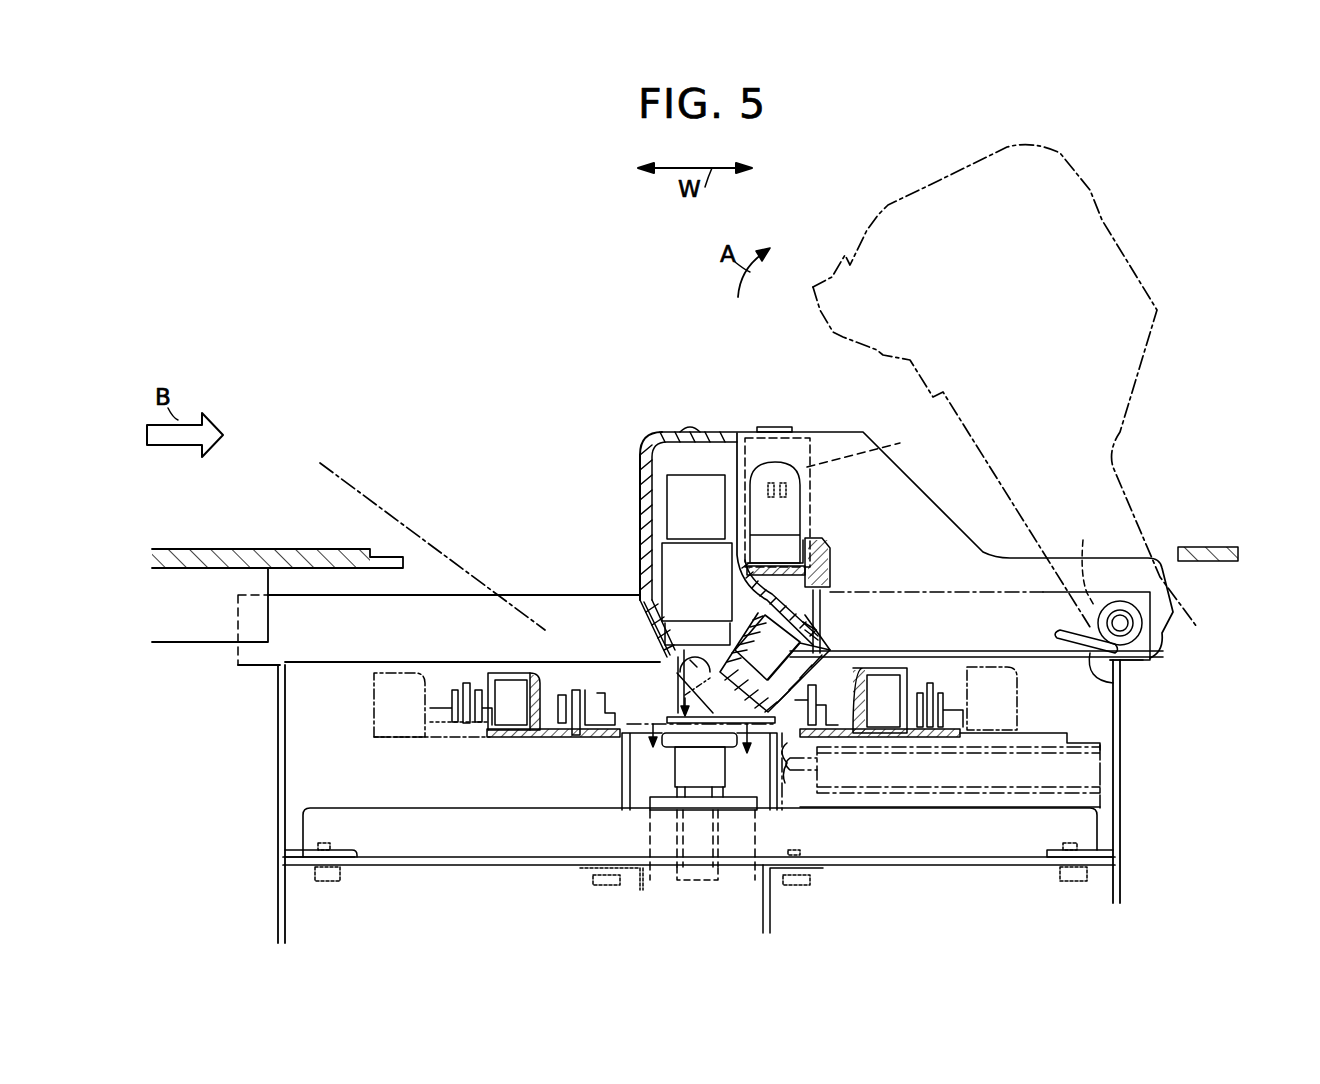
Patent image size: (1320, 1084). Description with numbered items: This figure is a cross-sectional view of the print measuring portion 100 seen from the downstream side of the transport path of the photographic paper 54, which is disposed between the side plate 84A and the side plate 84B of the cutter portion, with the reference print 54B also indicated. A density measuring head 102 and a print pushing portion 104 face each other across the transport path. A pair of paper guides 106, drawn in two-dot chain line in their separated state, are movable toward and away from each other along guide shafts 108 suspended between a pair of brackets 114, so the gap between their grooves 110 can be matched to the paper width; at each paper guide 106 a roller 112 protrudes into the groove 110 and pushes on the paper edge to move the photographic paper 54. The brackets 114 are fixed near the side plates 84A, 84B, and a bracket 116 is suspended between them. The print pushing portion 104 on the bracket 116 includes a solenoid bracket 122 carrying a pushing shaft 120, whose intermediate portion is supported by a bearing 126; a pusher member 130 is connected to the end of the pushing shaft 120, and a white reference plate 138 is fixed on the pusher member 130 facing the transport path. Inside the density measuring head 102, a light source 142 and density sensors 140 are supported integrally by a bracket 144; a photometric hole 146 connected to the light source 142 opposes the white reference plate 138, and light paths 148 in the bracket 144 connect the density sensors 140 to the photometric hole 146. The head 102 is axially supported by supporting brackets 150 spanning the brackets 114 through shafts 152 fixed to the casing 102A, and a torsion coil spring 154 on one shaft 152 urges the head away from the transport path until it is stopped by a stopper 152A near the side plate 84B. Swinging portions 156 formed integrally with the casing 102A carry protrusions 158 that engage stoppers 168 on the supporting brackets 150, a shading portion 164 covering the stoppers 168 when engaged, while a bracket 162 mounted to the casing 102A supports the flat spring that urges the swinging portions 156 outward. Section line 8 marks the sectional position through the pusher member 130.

The print measuring portion 100 is at (416, 343).
The density measuring head 102 is at (1098, 210).
The casing 102A is at (1100, 218).
The print pushing portion 104 is at (874, 918).
The paper guides 106 is at (382, 738).
The guide shafts 108 is at (1110, 761).
The grooves 110 is at (550, 736).
The roller 112 is at (467, 725).
The brackets 114 is at (280, 844).
The bracket 116 is at (492, 847).
The pushing shaft 120 is at (680, 878).
The solenoid bracket 122 is at (775, 906).
The bearing 126 is at (645, 808).
The pusher member 130 is at (677, 747).
The white reference plate 138 is at (723, 745).
The density sensors 140 is at (820, 622).
The light source 142 is at (675, 484).
The bracket 144 is at (648, 633).
The photometric hole 146 is at (670, 702).
The light paths 148 is at (670, 683).
The supporting brackets 150 is at (527, 592).
The shafts 152 is at (1153, 658).
The stopper 152A is at (1086, 561).
The torsion coil spring 154 is at (1119, 668).
The swinging portions 156 is at (806, 502).
The protrusion 158 is at (832, 578).
The bracket 162 is at (879, 448).
The shading portion 164 is at (813, 550).
The stoppers 168 is at (813, 568).
The photographic paper 54 is at (787, 733).
The reference print 54B is at (422, 515).
The side plate 84A is at (202, 547).
The side plate 84B is at (1204, 544).
The section line 8 is at (696, 753).